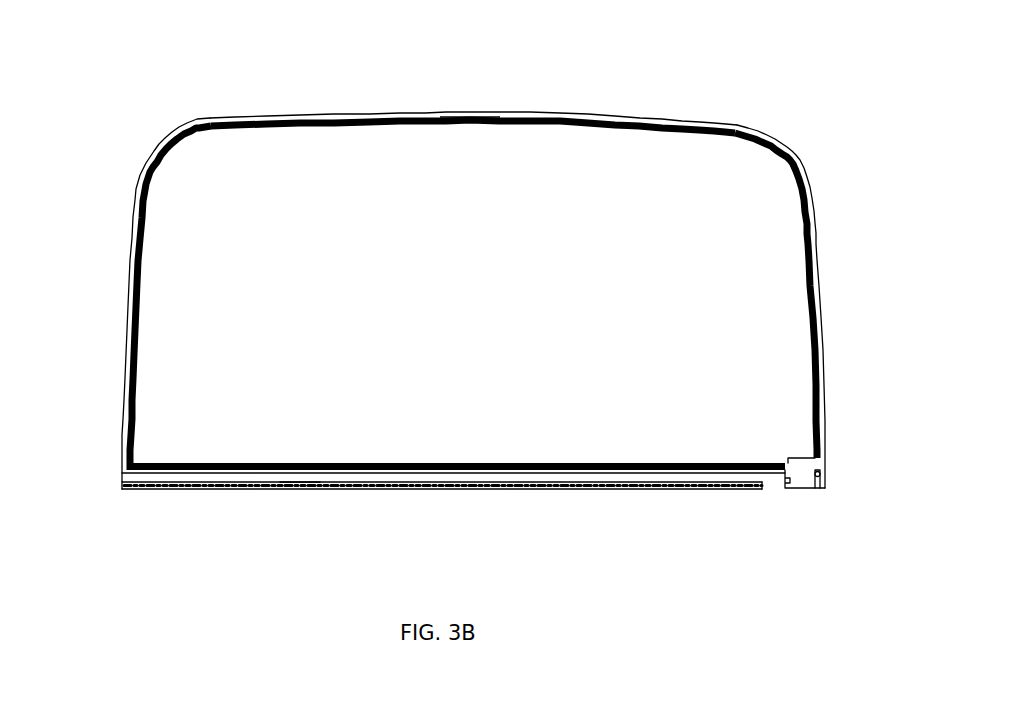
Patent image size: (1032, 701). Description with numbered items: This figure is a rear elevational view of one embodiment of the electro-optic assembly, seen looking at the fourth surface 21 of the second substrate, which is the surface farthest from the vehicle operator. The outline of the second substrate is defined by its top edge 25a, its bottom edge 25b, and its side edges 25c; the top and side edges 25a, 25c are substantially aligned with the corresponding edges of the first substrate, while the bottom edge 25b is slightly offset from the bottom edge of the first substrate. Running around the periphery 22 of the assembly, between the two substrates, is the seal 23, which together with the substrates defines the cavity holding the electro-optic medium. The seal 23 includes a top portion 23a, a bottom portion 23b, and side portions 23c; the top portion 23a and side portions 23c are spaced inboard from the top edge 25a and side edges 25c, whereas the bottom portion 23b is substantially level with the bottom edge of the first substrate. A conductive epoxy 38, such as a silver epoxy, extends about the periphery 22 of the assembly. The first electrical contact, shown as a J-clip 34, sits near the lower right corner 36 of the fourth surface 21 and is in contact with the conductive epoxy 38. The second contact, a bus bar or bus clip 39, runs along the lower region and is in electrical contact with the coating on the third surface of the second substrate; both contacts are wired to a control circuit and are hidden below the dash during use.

The fourth surface 21 is at (604, 395).
The periphery 22 is at (474, 304).
The seal 23 is at (475, 296).
The top portion 23a is at (278, 126).
The bottom portion 23b is at (391, 470).
The side portions 23c is at (128, 328).
The top edge 25a is at (397, 116).
The bottom edge 25b is at (453, 521).
The side edges 25c is at (130, 258).
The J-clip 34 is at (843, 496).
The lower right corner 36 is at (822, 483).
The conductive epoxy 38 is at (470, 118).
The bus clip 39 is at (300, 490).